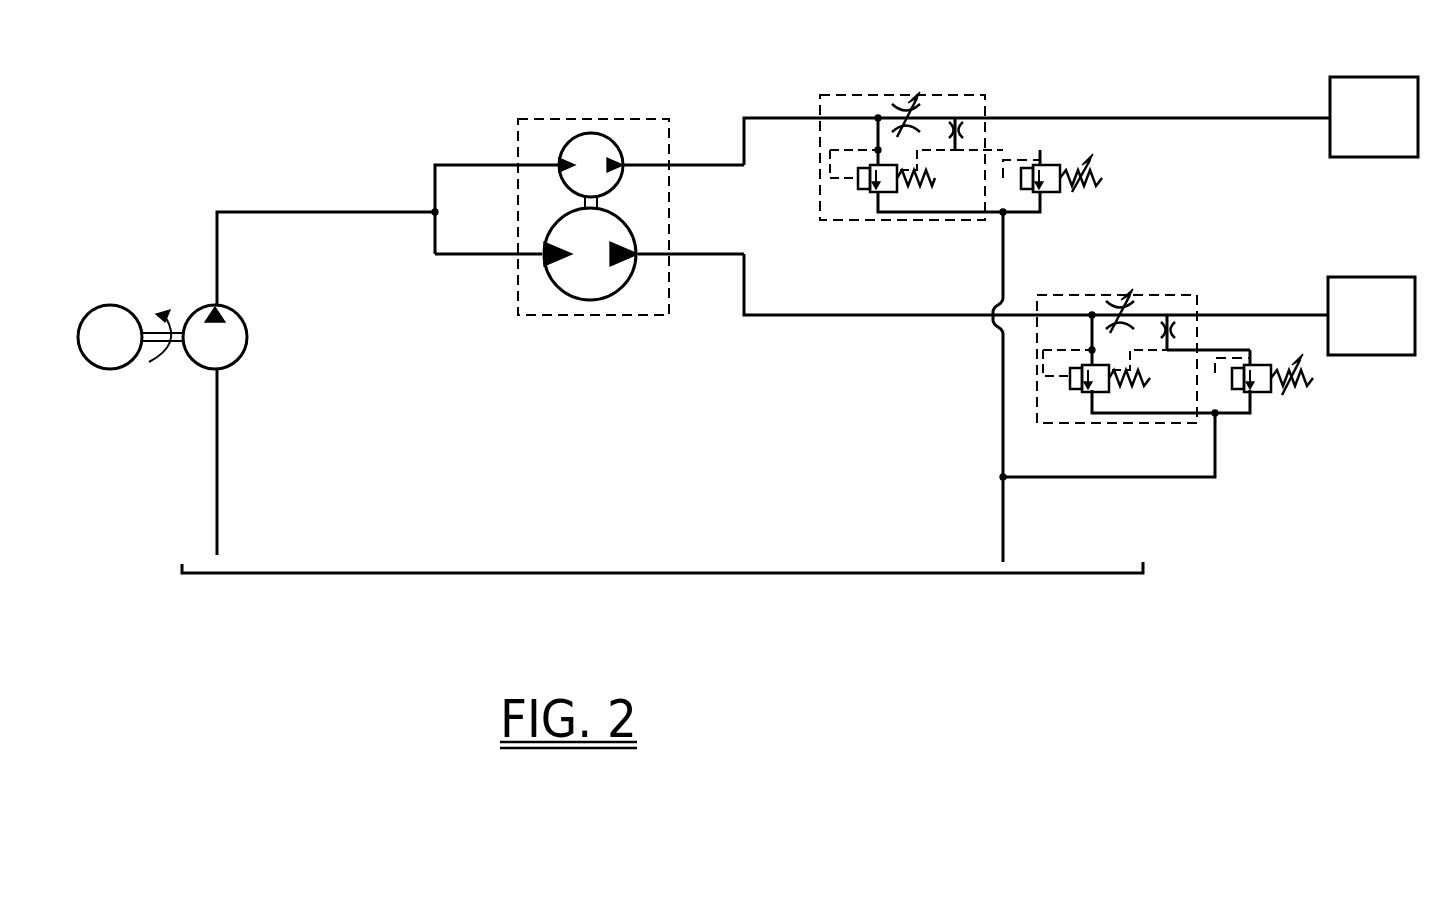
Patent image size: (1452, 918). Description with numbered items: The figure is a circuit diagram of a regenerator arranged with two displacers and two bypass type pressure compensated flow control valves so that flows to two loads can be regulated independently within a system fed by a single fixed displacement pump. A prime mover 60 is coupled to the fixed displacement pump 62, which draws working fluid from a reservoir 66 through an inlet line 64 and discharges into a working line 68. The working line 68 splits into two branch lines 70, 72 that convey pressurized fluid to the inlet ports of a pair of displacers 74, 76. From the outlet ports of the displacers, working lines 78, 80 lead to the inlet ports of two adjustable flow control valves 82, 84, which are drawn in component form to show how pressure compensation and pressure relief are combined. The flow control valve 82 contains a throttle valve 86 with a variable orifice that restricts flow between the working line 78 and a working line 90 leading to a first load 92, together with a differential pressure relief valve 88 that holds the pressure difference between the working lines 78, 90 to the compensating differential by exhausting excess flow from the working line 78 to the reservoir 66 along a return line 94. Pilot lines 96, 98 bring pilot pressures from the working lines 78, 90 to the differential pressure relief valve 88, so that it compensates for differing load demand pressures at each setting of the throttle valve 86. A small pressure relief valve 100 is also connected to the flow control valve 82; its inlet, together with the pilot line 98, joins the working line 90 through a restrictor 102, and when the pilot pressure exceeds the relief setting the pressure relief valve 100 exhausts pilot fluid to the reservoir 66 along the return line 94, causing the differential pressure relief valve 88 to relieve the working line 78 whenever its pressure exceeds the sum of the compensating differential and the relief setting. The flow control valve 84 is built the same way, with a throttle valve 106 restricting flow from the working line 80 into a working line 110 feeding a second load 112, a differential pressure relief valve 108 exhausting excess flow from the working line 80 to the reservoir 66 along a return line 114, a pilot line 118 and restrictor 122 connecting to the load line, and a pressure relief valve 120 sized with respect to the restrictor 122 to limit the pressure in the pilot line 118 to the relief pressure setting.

The prime mover 60 is at (96, 310).
The fixed displacement pump 62 is at (242, 353).
The inlet line 64 is at (218, 490).
The reservoir 66 is at (428, 572).
The working line 68 is at (252, 212).
The branch line 70 is at (497, 165).
The branch line 72 is at (495, 257).
The displacer 74 is at (595, 137).
The displacer 76 is at (568, 298).
The working line 78 is at (790, 115).
The working line 80 is at (797, 317).
The adjustable bypass type pressure compensated flow control valve 82 is at (872, 95).
The adjustable bypass type pressure compensated flow control valve 84 is at (1080, 295).
The throttle valve 86 is at (897, 102).
The differential pressure relief valve 88 is at (858, 182).
The working line 90 is at (1232, 118).
The first load 92 is at (1380, 77).
The return line 94 is at (1000, 283).
The pilot line 96 is at (847, 148).
The pilot line 98 is at (920, 160).
The pressure relief valve 100 is at (1057, 193).
The restrictor 102 is at (973, 128).
The throttle valve 106 is at (1110, 305).
The differential pressure relief valve 108 is at (1072, 385).
The working line 110 is at (1290, 315).
The second load 112 is at (1397, 277).
The return line 114 is at (1118, 480).
The pilot line 118 is at (1150, 350).
The pressure relief valve 120 is at (1258, 393).
The restrictor 122 is at (1185, 330).